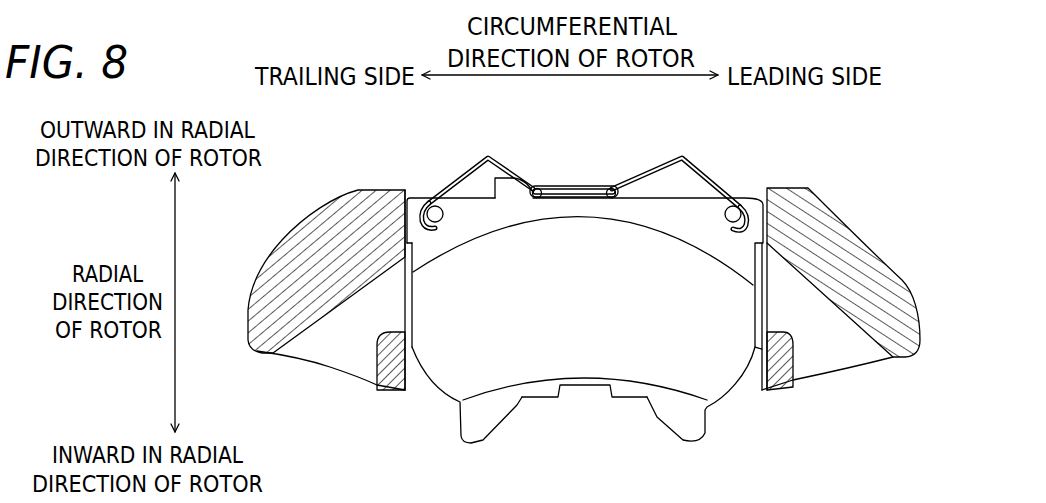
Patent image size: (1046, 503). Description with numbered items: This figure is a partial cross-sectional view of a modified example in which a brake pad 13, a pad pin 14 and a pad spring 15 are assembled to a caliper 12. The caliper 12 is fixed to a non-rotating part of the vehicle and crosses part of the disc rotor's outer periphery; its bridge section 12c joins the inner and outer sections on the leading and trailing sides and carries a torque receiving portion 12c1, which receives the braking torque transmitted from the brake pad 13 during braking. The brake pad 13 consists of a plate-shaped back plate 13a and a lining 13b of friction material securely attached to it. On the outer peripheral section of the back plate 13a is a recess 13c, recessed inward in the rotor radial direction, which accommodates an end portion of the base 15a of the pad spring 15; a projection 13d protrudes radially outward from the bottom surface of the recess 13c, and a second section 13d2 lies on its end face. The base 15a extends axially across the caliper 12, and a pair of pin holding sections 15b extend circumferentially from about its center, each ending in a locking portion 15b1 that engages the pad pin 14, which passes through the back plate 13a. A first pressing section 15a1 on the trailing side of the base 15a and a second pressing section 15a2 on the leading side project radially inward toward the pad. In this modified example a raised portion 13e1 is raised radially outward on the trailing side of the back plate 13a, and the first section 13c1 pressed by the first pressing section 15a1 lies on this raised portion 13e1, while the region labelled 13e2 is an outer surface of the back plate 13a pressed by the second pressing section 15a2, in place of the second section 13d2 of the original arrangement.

The caliper 12 is at (577, 261).
The bridge section 12c is at (302, 230).
The torque receiving portion 12c1 is at (407, 192).
The brake pad 13 is at (604, 313).
The back plate 13a is at (740, 394).
The lining 13b is at (583, 372).
The recess 13c is at (643, 213).
The first section 13c1 is at (532, 197).
The projection 13d is at (552, 187).
The second section 13d2 is at (608, 199).
The raised portion 13e1 is at (495, 188).
The projection 13e2 is at (572, 201).
The pad pin 14 is at (435, 223).
The pad spring 15 is at (579, 193).
The base 15a is at (572, 186).
The first pressing section 15a1 is at (534, 200).
The second pressing section 15a2 is at (613, 187).
The pin holding section 15b is at (505, 162).
The locking portion 15b1 is at (431, 203).